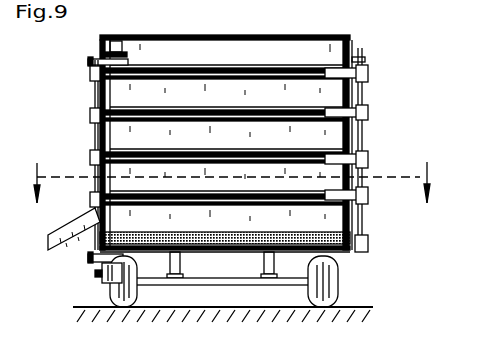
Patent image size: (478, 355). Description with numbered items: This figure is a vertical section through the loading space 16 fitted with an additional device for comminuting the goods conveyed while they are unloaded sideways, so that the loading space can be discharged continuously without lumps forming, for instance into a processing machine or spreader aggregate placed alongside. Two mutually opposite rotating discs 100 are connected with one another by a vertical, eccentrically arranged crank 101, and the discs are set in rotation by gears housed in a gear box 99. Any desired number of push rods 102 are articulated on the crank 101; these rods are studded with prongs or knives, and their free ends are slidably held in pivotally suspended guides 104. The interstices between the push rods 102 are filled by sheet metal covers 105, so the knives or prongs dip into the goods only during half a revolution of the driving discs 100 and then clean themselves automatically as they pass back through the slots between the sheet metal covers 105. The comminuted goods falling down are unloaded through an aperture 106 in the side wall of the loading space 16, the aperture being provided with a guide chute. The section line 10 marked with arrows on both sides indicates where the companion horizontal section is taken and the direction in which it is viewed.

The loading space 16 is at (349, 37).
The gear box 99 is at (106, 280).
The rotating discs 100 is at (88, 62).
The crank 101 is at (95, 99).
The push rods 102 is at (260, 163).
The guides 104 is at (364, 162).
The sheet metal covers 105 is at (185, 96).
The aperture 106 is at (55, 232).
The section line 10- 10 is at (230, 181).